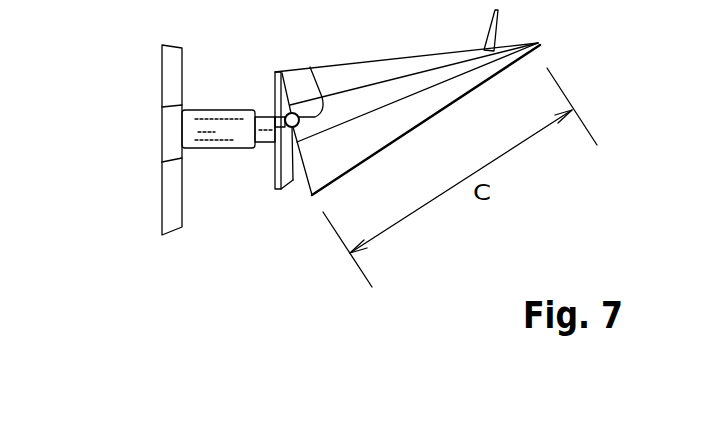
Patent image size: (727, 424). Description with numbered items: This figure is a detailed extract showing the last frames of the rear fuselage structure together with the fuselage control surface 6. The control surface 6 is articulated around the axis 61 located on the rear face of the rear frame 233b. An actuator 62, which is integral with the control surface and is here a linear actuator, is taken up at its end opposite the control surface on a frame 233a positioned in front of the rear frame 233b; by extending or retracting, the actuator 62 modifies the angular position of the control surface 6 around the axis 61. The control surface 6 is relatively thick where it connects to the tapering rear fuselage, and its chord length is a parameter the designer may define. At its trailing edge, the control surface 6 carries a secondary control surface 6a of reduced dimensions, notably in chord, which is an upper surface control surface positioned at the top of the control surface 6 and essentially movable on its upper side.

The frame 233a is at (168, 191).
The actuator 62 is at (200, 140).
The rear frame 233b is at (279, 190).
The axis 61 is at (310, 67).
The fuselage control surface 6 is at (412, 113).
The secondary control surface 6a is at (495, 33).